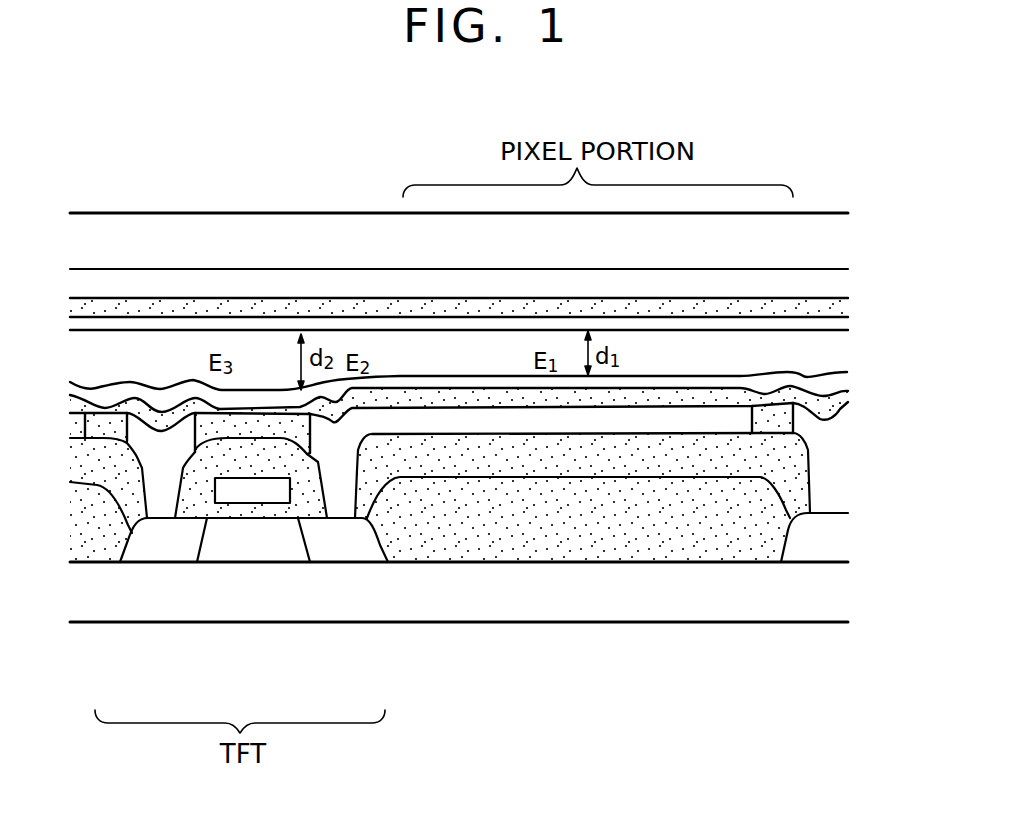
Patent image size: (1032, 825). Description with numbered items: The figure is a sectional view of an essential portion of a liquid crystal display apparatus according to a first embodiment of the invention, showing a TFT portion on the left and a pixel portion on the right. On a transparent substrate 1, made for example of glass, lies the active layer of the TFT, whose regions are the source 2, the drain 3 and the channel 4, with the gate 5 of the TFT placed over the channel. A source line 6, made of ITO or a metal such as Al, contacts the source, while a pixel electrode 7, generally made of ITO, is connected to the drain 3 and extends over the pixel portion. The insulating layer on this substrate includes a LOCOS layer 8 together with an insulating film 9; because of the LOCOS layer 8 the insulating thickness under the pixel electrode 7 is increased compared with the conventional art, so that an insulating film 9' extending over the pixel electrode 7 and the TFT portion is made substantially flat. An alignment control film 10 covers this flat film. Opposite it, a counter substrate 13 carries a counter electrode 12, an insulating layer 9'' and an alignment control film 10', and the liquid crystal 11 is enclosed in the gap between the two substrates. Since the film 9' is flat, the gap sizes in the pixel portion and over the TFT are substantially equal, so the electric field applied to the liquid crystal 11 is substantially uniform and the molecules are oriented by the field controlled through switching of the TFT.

The transparent substrate 1 is at (805, 605).
The source 2 is at (163, 552).
The drain 3 is at (340, 553).
The channel 4 is at (223, 552).
The gate 5 is at (262, 495).
The source line 6 is at (158, 505).
The pixel electrode 7 is at (442, 425).
The LOCOS layer 8 is at (627, 550).
The insulating film 9 is at (445, 550).
The insulating film 9' is at (489, 419).
The insulating layer 9'' is at (492, 291).
The alignment control film 10 is at (492, 377).
The alignment control film 10' is at (496, 314).
The liquid crystal 11 is at (837, 352).
The counter electrode 12 is at (838, 281).
The counter substrate 13 is at (836, 237).